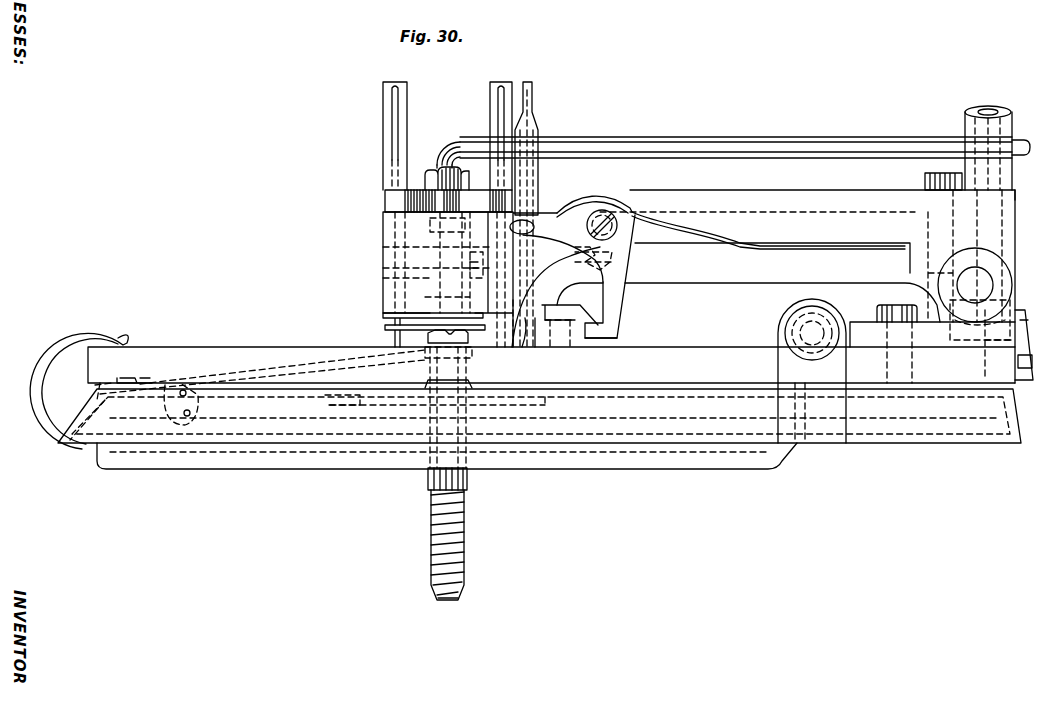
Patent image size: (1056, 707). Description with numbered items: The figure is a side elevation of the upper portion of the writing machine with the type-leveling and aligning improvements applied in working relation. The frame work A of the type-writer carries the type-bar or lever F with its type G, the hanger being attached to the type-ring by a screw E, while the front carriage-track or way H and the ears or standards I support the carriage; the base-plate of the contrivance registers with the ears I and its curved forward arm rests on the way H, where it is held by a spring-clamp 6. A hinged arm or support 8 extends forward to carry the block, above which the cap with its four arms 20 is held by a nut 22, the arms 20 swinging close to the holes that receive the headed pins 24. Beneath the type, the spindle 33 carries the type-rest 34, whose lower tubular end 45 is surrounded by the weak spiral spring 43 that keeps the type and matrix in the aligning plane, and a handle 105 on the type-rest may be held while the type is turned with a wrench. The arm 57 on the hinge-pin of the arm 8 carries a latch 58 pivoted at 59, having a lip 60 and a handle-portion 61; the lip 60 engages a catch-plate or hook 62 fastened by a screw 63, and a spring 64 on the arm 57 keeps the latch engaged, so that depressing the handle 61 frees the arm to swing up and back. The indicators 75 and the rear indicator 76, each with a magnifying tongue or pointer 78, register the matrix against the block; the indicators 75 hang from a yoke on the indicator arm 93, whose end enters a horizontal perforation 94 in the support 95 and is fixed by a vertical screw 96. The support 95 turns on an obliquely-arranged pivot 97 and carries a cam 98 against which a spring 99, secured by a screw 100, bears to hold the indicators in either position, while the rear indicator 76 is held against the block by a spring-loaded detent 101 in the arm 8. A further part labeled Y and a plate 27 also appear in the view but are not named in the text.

The spring-clamp 6 is at (79, 386).
The arm or support 8 is at (551, 286).
The arms of the cap 20 is at (383, 208).
The nut 22 is at (430, 170).
The pins 24 is at (383, 316).
The plate 27 is at (385, 328).
The spindle 33 is at (447, 600).
The type-rest 34 is at (470, 346).
The spiral spring 43 is at (464, 545).
The lower tubular end of the type-rest 45 is at (467, 482).
The horizontal forwardly-projecting arm 57 is at (653, 194).
The latch 58 is at (622, 307).
The pivot of the latch 59 is at (602, 210).
The lip 60 is at (601, 330).
The handle-portion 61 is at (556, 250).
The catch-plate or hook 62 is at (567, 297).
The screw 63 is at (560, 378).
The spring 64 is at (768, 230).
The indicators 75 is at (382, 136).
The indicator 76 is at (538, 130).
The tongue or pointer 78 is at (400, 79).
The indicator arm or support 93 is at (724, 143).
The horizontal perforation 94 is at (1014, 139).
The support or bearing 95 is at (1000, 187).
The vertical screw 96 is at (986, 110).
The inclined or obliquely-arranged pivot 97 is at (1015, 193).
The cam 98 is at (1010, 300).
The spring 99 is at (1025, 332).
The screw 100 is at (1015, 380).
The detent 101 is at (556, 297).
The handle 105 is at (560, 401).
The frame work A is at (539, 429).
The screw E is at (140, 378).
The type-bar or lever F is at (292, 370).
The type G is at (462, 348).
The front carriage-track or way H is at (97, 386).
The ears or standards I is at (812, 371).
The block Y is at (932, 344).